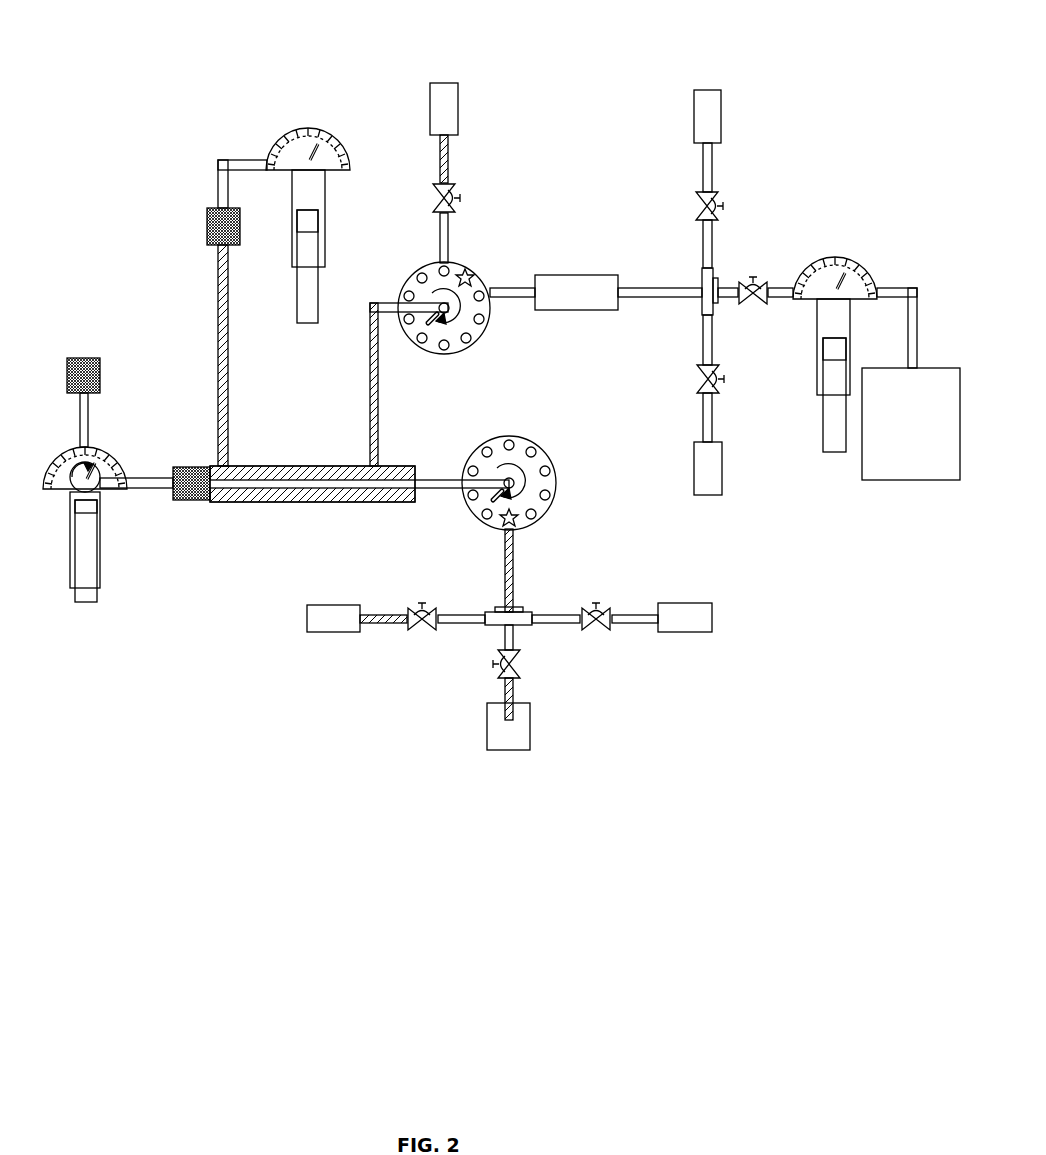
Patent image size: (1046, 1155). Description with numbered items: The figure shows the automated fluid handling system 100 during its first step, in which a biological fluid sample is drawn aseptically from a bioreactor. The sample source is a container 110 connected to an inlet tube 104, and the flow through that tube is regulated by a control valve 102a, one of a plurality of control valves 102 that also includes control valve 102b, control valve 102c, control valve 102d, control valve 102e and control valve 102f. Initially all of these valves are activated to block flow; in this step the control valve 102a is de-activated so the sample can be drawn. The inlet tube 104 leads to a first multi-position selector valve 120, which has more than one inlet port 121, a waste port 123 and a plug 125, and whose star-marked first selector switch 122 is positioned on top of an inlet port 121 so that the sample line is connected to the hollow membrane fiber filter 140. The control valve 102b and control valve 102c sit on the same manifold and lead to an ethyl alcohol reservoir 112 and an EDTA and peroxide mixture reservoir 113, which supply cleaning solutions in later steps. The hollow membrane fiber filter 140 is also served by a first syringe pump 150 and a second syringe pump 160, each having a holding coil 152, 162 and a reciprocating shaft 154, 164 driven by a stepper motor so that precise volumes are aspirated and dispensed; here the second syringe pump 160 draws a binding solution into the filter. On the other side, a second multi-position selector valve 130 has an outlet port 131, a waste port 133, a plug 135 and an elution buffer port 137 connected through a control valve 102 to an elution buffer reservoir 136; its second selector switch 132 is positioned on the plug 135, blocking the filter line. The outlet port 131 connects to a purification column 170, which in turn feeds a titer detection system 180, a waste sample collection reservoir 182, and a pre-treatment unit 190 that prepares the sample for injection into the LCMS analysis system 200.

The automated fluid handling system 100 is at (597, 100).
The control valve 102 is at (452, 194).
The control valve 102a is at (500, 665).
The control valve 102b is at (422, 630).
The control valve 102c is at (598, 630).
The control valve 102d is at (703, 388).
The control valve 102e is at (718, 214).
The control valve 102f is at (752, 307).
The inlet tube 104 is at (513, 560).
The container 110 is at (515, 735).
The ethyl alcohol reservoir 112 is at (340, 622).
The EDTA and peroxide mixture reservoir 113 is at (695, 617).
The first multi-position selector valve 120 is at (542, 461).
The inlet port 121 is at (540, 512).
The first selector switch 122 is at (520, 528).
The waste port 123 is at (508, 440).
The plug 125 is at (535, 450).
The second multi-position selector valve 130 is at (477, 283).
The outlet port 131 is at (490, 318).
The second selector switch 132 is at (437, 322).
The waste port 133 is at (423, 272).
The plug 135 is at (470, 284).
The elution buffer reservoir 136 is at (452, 130).
The elution buffer port 137 is at (456, 285).
The hollow membrane fiber filter 140 is at (258, 502).
The first syringe pump 150 is at (98, 548).
The holding coil 152 is at (95, 363).
The reciprocating shaft 154 is at (86, 590).
The second syringe pump 160 is at (306, 207).
The holding coil 162 is at (240, 220).
The reciprocating shaft 164 is at (311, 250).
The purification column 170 is at (577, 292).
The titer detection system 180 is at (710, 118).
The waste sample collection reservoir 182 is at (707, 472).
The pre-treatment unit 190 is at (838, 400).
The LCMS analysis system 200 is at (905, 480).